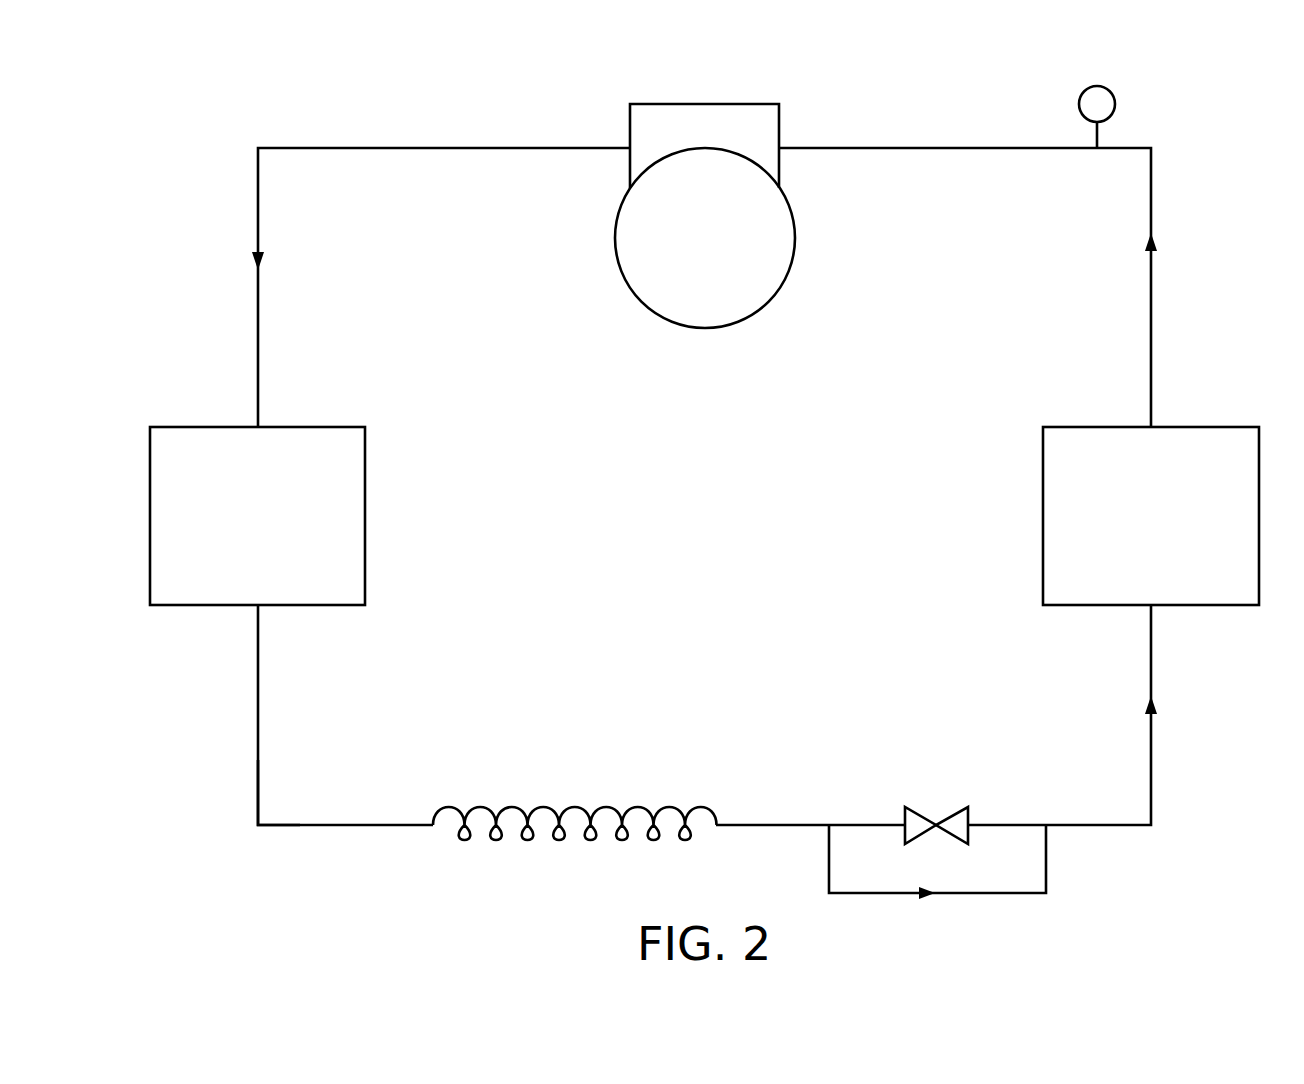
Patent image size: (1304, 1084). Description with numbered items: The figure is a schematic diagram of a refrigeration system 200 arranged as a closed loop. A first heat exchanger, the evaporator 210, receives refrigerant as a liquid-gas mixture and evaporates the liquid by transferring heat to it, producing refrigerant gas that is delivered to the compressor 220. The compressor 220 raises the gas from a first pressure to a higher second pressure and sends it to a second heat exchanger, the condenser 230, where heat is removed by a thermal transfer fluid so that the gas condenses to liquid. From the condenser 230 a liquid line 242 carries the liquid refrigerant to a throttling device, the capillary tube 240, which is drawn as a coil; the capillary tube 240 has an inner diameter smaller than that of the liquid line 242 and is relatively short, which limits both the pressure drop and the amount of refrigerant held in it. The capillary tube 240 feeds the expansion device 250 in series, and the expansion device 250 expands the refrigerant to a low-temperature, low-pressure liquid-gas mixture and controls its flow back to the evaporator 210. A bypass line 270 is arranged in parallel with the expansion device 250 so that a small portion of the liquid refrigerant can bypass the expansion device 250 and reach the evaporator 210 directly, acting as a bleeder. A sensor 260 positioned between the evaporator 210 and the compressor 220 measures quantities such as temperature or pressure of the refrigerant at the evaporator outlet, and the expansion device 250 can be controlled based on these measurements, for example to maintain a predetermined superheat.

The refrigeration system 200 is at (238, 92).
The evaporator 210 is at (1240, 443).
The compressor 220 is at (762, 121).
The condenser 230 is at (346, 443).
The capillary tube 240 is at (672, 809).
The liquid line 242 is at (258, 785).
The expansion device 250 is at (960, 820).
The sensor 260 is at (1118, 104).
The bypass line 270 is at (990, 893).